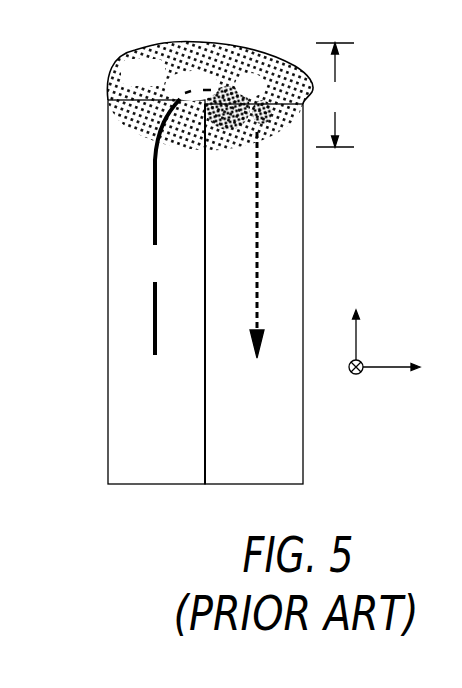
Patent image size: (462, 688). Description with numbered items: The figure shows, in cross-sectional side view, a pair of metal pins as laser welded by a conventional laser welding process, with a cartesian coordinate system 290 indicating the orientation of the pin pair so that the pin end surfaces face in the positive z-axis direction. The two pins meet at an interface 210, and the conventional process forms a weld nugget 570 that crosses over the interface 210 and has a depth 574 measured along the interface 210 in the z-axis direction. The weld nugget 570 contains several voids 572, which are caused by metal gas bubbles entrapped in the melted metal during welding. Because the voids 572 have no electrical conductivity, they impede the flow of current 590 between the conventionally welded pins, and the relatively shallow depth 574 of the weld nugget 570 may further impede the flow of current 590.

The interface 210 is at (205, 187).
The weld nugget 570 is at (210, 95).
The voids 572 is at (165, 89).
The depth 574 is at (335, 95).
The current 590 is at (157, 227).
The cartesian coordinate system 290 is at (382, 382).